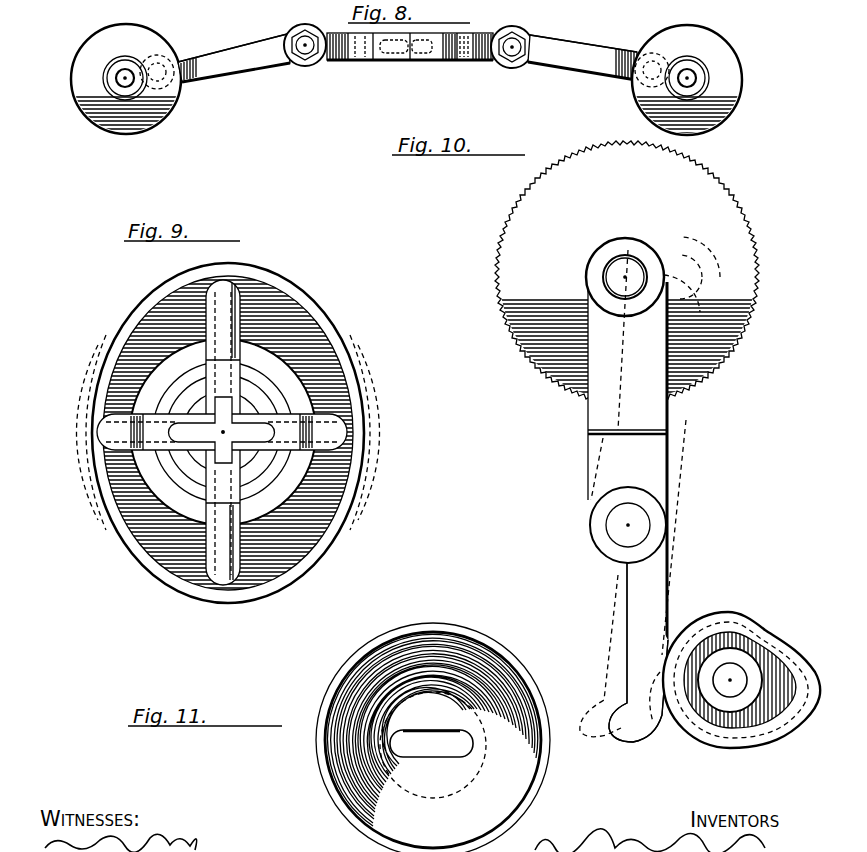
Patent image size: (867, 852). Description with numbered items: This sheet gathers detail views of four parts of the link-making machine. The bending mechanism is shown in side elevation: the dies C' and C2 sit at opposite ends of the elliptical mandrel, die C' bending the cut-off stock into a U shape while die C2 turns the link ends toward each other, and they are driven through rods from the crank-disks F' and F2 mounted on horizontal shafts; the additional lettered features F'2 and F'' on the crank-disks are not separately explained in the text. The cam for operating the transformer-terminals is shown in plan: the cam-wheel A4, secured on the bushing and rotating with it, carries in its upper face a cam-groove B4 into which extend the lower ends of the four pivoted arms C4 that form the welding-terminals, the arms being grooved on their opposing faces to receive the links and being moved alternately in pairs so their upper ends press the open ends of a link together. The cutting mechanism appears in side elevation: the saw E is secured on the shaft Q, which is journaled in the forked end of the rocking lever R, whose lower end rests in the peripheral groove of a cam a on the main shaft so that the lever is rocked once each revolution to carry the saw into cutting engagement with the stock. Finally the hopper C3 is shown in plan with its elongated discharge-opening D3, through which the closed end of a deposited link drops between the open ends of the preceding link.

In FIG. 8, the crank-disk F2 is at (241, 50).
In FIG. 8, the left disc of link F'2 is at (126, 95).
In FIG. 8, the crank-disk F' is at (582, 43).
In FIG. 8, the right disc of link F'' is at (707, 80).
In FIG. 8, the die C2 is at (366, 62).
In FIG. 8, the die C' is at (410, 65).
In FIG. 9, the pivoted arms C4 is at (237, 292).
In FIG. 9, the cam-groove B4 is at (315, 497).
In FIG. 9, the cam-wheel A4 is at (310, 562).
In FIG. 10, the saw E is at (535, 203).
In FIG. 10, the shaft Q is at (626, 268).
In FIG. 10, the rocking lever R is at (601, 422).
In FIG. 10, the cam a is at (748, 613).
In FIG. 11, the hopper C3 is at (470, 634).
In FIG. 11, the discharge-opening D3 is at (450, 758).